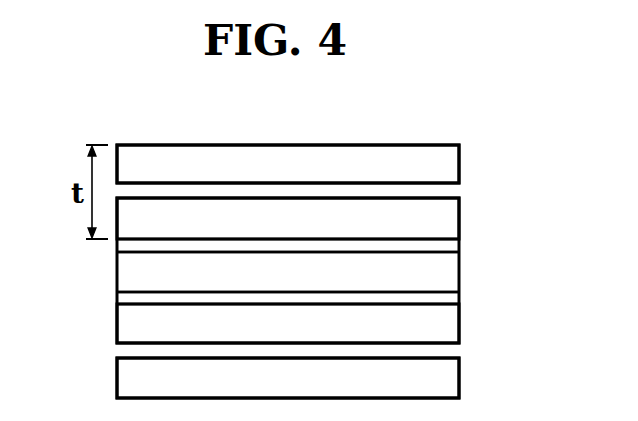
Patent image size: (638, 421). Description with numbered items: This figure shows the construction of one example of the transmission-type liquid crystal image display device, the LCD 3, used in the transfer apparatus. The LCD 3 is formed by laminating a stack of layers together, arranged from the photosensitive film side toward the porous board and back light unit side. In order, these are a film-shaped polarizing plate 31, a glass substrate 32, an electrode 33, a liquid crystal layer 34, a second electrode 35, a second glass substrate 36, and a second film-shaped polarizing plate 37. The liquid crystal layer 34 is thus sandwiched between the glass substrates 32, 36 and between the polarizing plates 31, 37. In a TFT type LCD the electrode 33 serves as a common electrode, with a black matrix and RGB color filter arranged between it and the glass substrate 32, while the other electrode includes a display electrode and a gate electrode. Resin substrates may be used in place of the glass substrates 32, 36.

The LCD 3 is at (458, 118).
The film-shaped polarizing plate 31 is at (452, 164).
The glass substrate 32 is at (452, 219).
The electrode 33 is at (455, 247).
The liquid crystal layer 34 is at (443, 279).
The electrode 35 is at (457, 299).
The glass substrate 36 is at (453, 331).
The film-shaped polarizing plate 37 is at (453, 386).